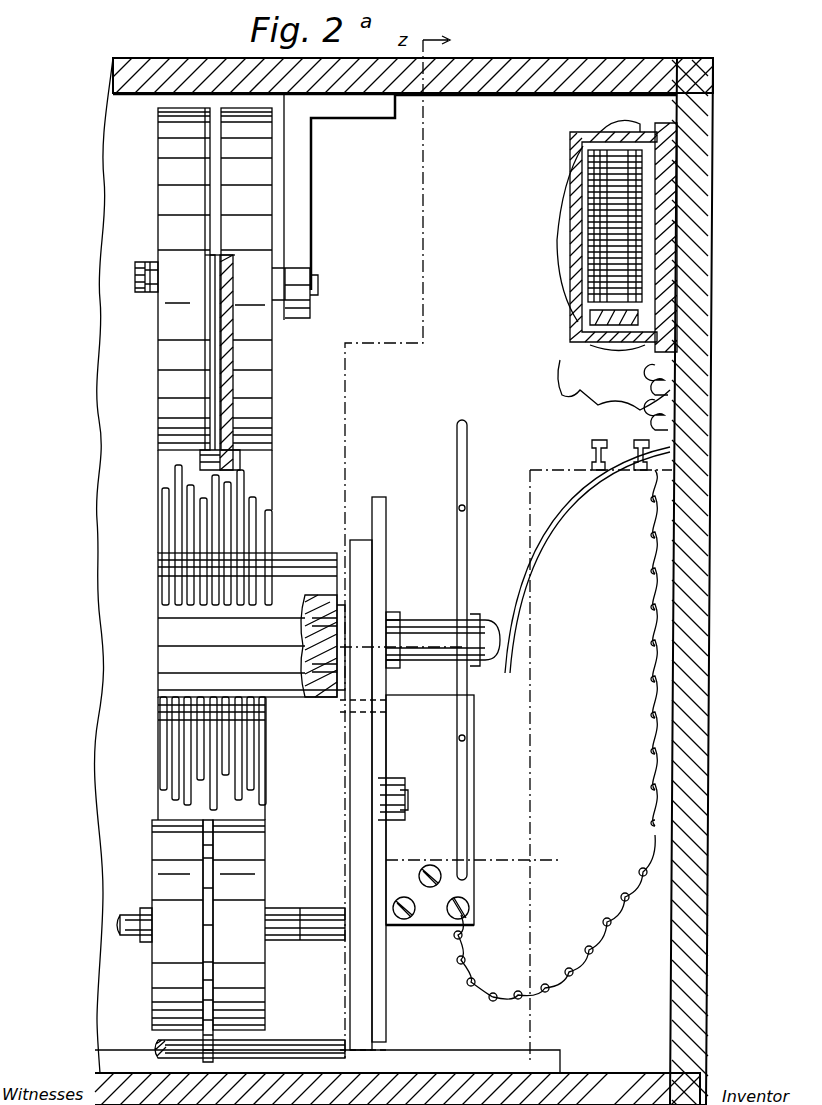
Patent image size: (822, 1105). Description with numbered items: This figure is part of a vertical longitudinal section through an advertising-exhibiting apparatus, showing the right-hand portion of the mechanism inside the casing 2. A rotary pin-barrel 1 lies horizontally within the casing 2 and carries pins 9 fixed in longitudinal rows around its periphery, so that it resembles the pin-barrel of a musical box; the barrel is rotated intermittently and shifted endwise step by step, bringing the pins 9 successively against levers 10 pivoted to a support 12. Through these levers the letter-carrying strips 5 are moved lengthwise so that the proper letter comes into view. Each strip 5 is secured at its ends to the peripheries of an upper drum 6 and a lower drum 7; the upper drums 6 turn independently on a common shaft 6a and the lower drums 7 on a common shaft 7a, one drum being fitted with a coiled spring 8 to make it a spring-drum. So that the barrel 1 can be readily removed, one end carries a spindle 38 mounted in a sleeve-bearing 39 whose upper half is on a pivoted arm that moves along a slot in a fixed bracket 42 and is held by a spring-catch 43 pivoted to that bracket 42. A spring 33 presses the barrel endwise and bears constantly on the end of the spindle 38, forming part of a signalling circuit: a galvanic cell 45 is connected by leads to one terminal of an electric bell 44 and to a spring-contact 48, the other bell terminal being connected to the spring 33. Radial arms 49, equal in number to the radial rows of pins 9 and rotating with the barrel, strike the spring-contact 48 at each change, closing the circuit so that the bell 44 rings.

The rotary pin-barrel 1 is at (251, 625).
The casing 2 is at (690, 585).
The strips 5 is at (211, 759).
The upper drums 6 is at (215, 279).
The shaft 6a is at (145, 272).
The lower drums 7 is at (279, 925).
The shaft 7a is at (122, 932).
The coiled spring 8 is at (208, 945).
The pins 9 is at (200, 697).
The levers 10 is at (218, 324).
The support 12 is at (236, 392).
The spring 33 is at (550, 520).
The spindle 38 is at (430, 634).
The sleeve-bearing 39 is at (393, 644).
The fixed bracket 42 is at (372, 1012).
The spring-catch 43 is at (386, 558).
The electric bell 44 is at (570, 190).
The galvanic cell 45 is at (555, 735).
The spring-contact 48 is at (430, 810).
The radial arms or pins 49 is at (467, 485).